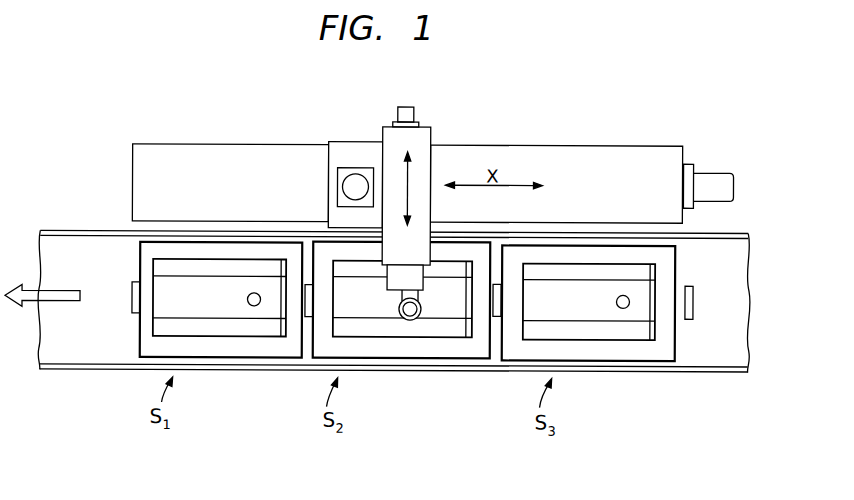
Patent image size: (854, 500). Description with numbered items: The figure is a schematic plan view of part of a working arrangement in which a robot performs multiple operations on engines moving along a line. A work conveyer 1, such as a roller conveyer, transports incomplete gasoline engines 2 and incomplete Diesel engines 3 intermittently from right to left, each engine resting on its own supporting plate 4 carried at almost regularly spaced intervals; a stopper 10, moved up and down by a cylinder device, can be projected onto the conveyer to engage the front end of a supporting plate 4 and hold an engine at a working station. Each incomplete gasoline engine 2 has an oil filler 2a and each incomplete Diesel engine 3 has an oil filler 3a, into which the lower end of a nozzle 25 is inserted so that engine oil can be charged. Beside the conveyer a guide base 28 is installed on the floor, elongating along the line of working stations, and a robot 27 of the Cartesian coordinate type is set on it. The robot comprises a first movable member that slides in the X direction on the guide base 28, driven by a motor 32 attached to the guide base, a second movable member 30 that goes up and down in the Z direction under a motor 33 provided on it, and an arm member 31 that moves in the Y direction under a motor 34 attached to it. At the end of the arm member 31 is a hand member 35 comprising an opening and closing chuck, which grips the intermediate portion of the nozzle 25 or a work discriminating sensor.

The work conveyer 1 is at (718, 370).
The incomplete gasoline engine 2 is at (207, 328).
The oil filler 2a is at (254, 306).
The incomplete Diesel engine 3 is at (455, 333).
The oil filler 3a is at (418, 315).
The supporting plate 4 is at (275, 347).
The stopper 10 is at (132, 298).
The nozzle 25 is at (402, 320).
The robot 27 is at (436, 117).
The guide base 28 is at (587, 152).
The second movable member 30 is at (352, 150).
The arm member 31 is at (428, 165).
The motor 32 is at (712, 177).
The motor 33 is at (347, 188).
The motor 34 is at (395, 119).
The hand member 35 is at (399, 308).